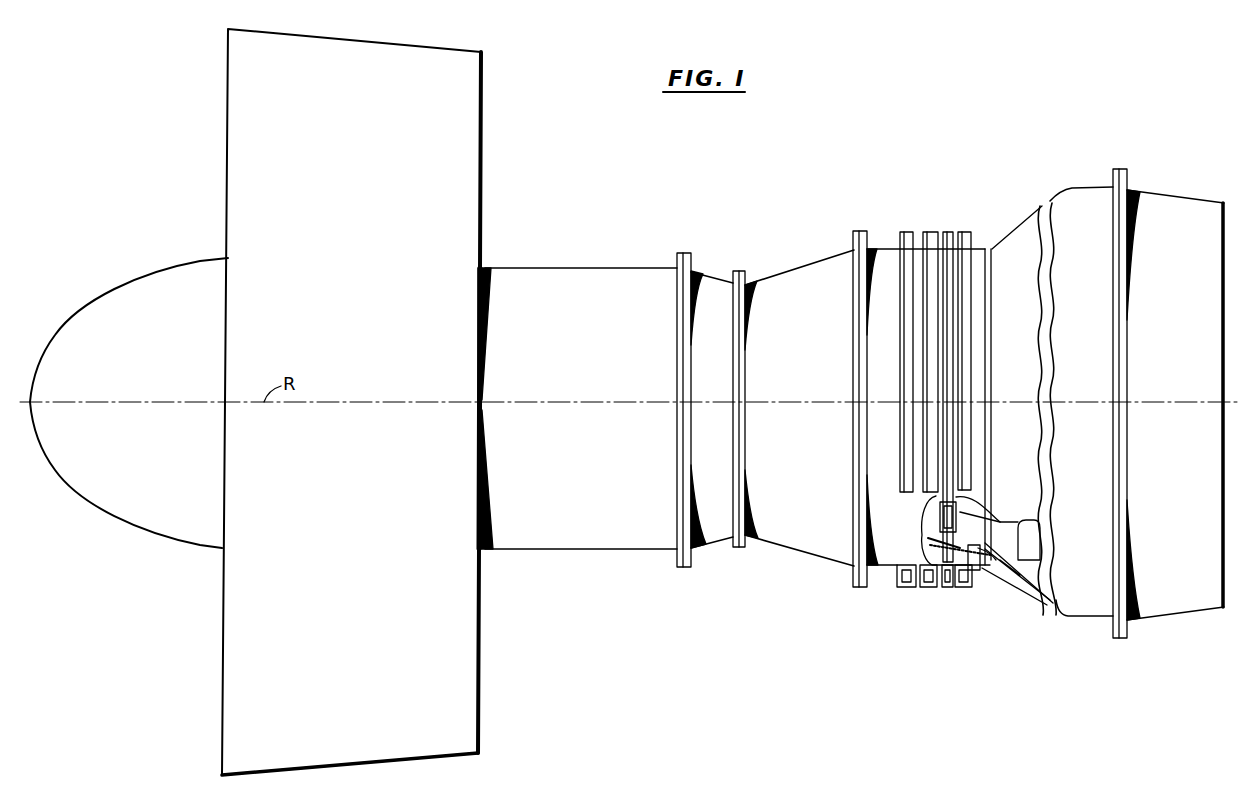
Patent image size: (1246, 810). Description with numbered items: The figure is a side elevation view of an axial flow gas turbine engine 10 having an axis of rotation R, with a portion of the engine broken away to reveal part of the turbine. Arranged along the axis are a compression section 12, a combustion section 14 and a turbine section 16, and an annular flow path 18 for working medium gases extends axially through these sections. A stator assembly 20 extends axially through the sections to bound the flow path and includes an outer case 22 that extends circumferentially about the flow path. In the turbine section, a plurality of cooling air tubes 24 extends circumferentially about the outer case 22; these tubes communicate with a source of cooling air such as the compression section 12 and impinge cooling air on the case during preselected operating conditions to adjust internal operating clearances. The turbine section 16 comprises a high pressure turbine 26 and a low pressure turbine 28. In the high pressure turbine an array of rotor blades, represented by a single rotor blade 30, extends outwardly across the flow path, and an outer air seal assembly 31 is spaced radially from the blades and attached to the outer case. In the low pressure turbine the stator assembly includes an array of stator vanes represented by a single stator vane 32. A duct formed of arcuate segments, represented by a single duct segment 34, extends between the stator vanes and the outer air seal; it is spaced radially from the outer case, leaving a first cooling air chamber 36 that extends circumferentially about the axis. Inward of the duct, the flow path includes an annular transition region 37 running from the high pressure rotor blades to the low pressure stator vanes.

The gas turbine engine 10 is at (752, 169).
The compression section 12 is at (495, 284).
The combustion section 14 is at (827, 270).
The turbine section 16 is at (886, 258).
The annular flow path 18 is at (215, 177).
The stator assembly 20 is at (985, 574).
The outer case 22 is at (1008, 582).
The cooling air tubes 24 is at (911, 588).
The high pressure turbine 26 is at (978, 650).
The low pressure turbine 28 is at (1116, 640).
The rotor blade 30 is at (941, 506).
The outer air seal assembly 31 is at (936, 528).
The stator vane 32 is at (1032, 520).
The duct segment 34 is at (985, 548).
The first cooling air chamber 36 is at (977, 582).
The annular transition region 37 is at (972, 516).